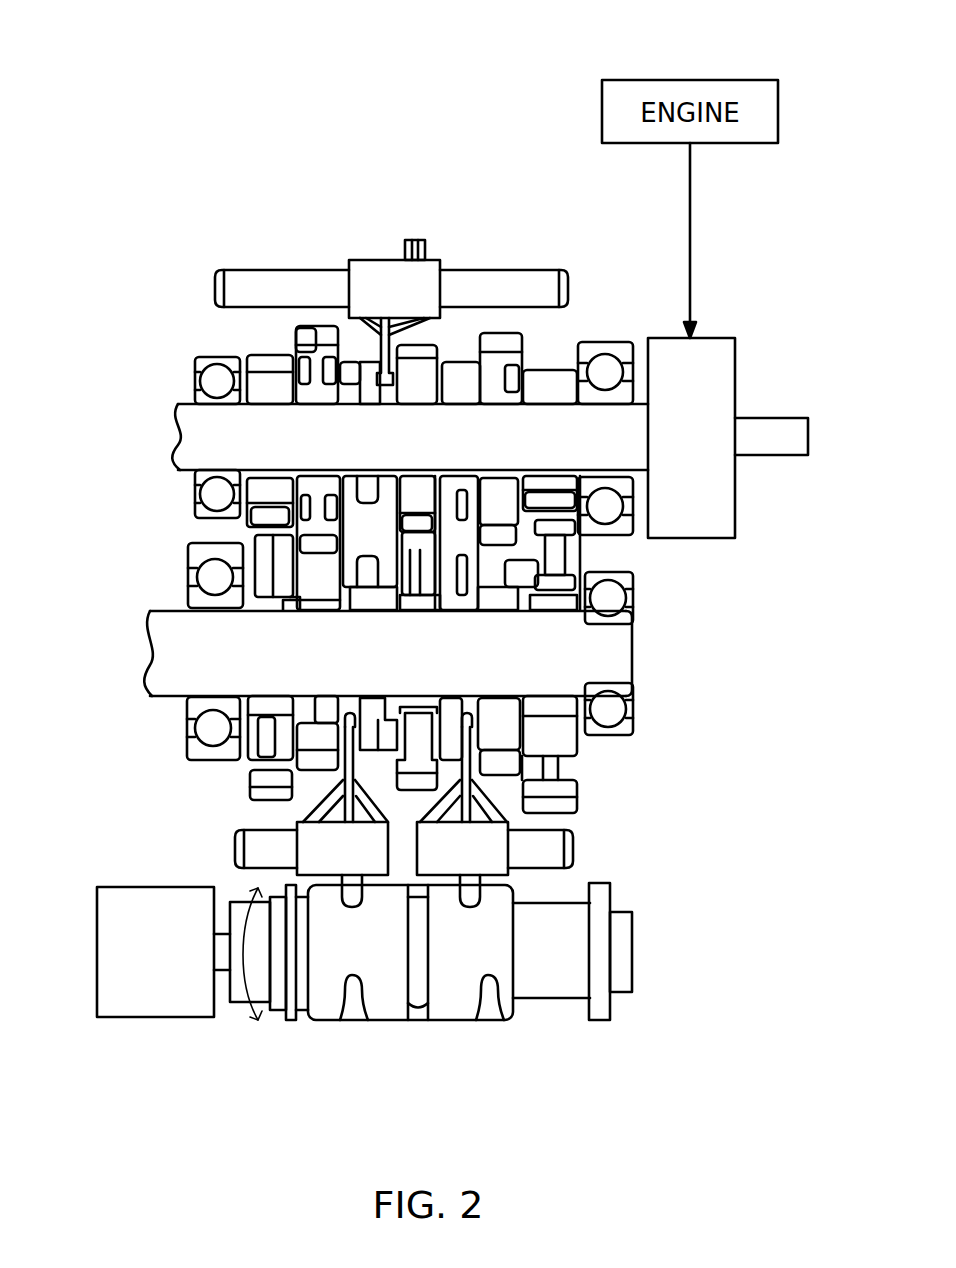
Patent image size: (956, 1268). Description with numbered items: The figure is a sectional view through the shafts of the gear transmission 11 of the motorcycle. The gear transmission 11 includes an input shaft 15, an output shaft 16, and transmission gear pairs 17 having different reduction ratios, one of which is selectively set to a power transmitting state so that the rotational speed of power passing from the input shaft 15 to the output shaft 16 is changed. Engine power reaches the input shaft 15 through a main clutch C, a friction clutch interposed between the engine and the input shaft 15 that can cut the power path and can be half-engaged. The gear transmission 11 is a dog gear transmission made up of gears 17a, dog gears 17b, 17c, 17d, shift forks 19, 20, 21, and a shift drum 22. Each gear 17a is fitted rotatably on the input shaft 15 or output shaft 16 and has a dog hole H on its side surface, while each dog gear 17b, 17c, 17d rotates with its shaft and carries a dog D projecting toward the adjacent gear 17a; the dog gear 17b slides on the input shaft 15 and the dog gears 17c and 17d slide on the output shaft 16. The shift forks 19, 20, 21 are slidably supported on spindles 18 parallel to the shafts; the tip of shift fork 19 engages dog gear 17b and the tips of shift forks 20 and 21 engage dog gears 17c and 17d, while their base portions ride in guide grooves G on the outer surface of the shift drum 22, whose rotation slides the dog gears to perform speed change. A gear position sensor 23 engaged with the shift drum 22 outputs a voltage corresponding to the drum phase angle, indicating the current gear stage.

The gear transmission 11 is at (210, 138).
The input shaft 15 is at (190, 430).
The output shaft 16 is at (163, 650).
The transmission gear pairs 17 is at (212, 342).
The gear 17a is at (298, 340).
The dog gear 17b is at (423, 360).
The dog gear 17c is at (415, 757).
The dog gear 17d is at (255, 735).
The spindle 18 is at (568, 292).
The shift fork 19 is at (385, 280).
The shift fork 20 is at (490, 852).
The shift fork 21 is at (330, 853).
The shift drum 22 is at (510, 1020).
The gear position sensor 23 is at (160, 1020).
The main clutch C is at (735, 515).
The dog D is at (352, 358).
The dog hole H is at (328, 372).
The guide groove G is at (353, 1010).